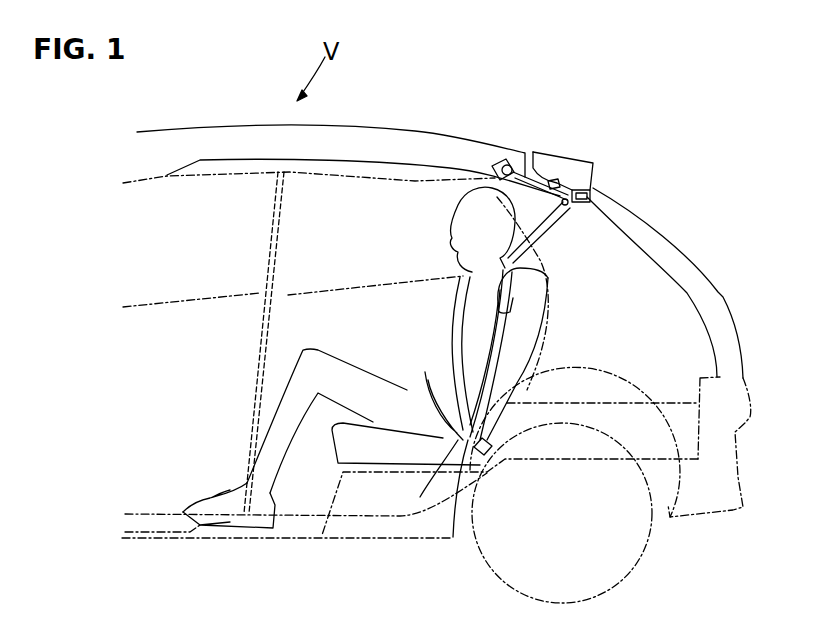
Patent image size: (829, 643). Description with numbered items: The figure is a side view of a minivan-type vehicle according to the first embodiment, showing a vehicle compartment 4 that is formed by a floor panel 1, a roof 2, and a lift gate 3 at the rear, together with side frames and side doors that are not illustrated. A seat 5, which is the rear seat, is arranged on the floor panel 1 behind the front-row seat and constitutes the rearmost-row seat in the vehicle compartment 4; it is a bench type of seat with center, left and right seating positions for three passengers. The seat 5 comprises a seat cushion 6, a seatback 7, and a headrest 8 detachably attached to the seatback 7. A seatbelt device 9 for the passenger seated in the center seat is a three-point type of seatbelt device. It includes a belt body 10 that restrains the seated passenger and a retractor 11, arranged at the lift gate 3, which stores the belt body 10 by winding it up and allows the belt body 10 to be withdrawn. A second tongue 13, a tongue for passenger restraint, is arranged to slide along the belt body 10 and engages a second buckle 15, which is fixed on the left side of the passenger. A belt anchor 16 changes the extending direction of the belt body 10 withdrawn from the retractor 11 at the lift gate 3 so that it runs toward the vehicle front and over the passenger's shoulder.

The floor panel 1 is at (150, 525).
The roof 2 is at (403, 123).
The lift gate 3 is at (673, 229).
The vehicle compartment 4 is at (218, 357).
The seat 5 is at (550, 332).
The seat cushion 6 is at (340, 447).
The seatback 7 is at (513, 360).
The headrest 8 is at (525, 286).
The seatbelt device 9 is at (562, 232).
The belt body 10 is at (457, 330).
The retractor 11 is at (510, 162).
The second tongue 13 is at (463, 442).
The second buckle 15 is at (485, 472).
The belt anchor 16 is at (593, 190).